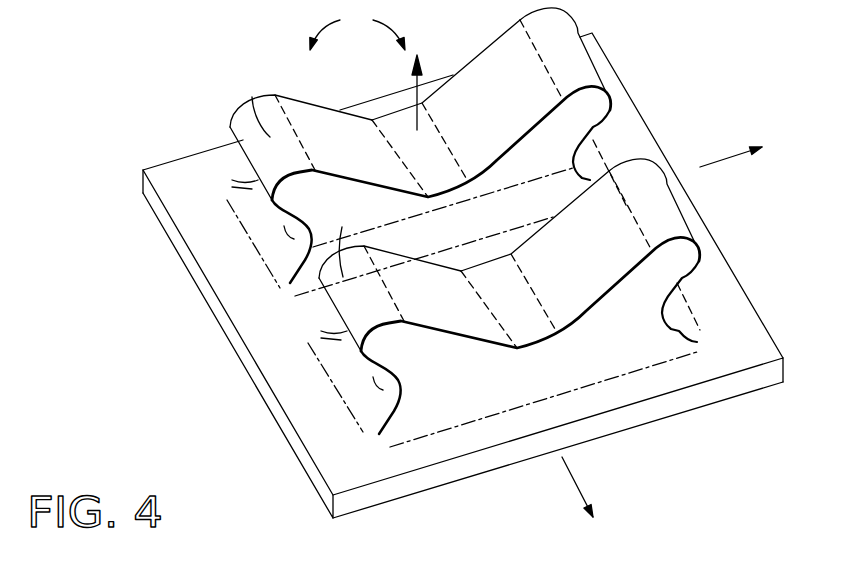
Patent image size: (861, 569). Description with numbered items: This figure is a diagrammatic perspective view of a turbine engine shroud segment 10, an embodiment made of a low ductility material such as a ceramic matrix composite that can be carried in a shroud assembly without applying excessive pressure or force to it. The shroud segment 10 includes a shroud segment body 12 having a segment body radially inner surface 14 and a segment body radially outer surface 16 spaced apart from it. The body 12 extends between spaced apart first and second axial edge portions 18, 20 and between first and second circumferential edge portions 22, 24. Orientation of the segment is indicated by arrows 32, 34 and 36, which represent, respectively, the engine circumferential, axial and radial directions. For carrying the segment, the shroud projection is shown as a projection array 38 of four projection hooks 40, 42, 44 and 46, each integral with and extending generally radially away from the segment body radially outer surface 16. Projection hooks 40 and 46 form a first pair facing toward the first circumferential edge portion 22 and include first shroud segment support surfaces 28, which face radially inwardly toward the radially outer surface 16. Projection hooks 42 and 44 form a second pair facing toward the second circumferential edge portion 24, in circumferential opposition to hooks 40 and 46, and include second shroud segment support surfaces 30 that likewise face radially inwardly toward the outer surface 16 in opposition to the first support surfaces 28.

The shroud segment 10 is at (440, 262).
The shroud segment body 12 is at (434, 276).
The segment body radially inner surface 14 is at (398, 501).
The segment body radially outer surface 16 is at (262, 322).
The first axial edge portion 18 is at (154, 164).
The second axial edge portion 20 is at (494, 459).
The first circumferential edge portion 22 is at (212, 298).
The second circumferential edge portion 24 is at (556, 296).
The first shroud segment support surface 28 is at (224, 146).
The second shroud segment support surface 30 is at (684, 273).
The circumferential direction arrow 32 is at (725, 157).
The axial direction arrow 34 is at (578, 479).
The radial direction arrow 36 is at (421, 96).
The projection array 38 is at (366, 70).
The projection hook 40 is at (342, 227).
The projection hook 42 is at (562, 72).
The projection hook 44 is at (638, 214).
The projection hook 46 is at (252, 97).